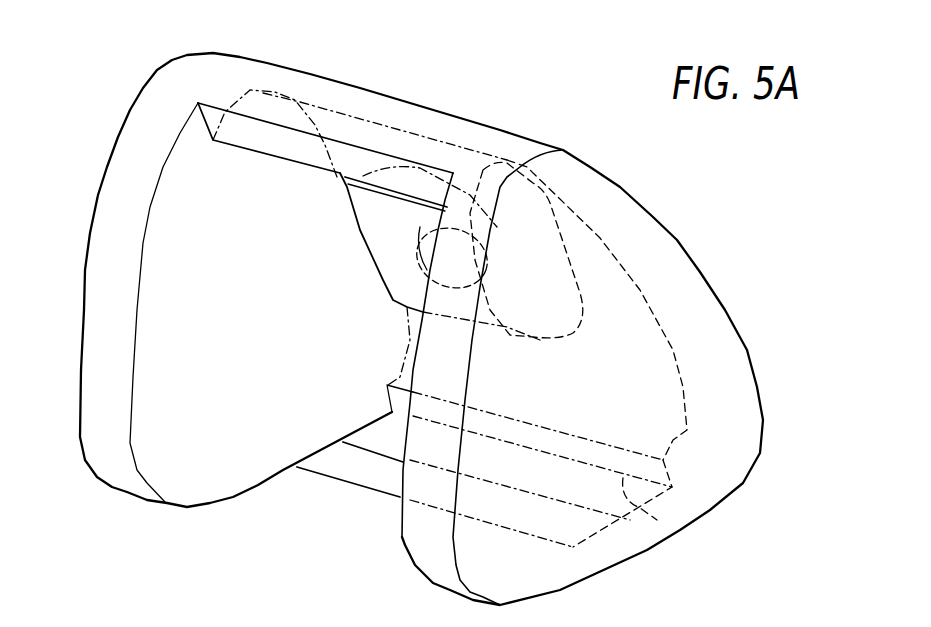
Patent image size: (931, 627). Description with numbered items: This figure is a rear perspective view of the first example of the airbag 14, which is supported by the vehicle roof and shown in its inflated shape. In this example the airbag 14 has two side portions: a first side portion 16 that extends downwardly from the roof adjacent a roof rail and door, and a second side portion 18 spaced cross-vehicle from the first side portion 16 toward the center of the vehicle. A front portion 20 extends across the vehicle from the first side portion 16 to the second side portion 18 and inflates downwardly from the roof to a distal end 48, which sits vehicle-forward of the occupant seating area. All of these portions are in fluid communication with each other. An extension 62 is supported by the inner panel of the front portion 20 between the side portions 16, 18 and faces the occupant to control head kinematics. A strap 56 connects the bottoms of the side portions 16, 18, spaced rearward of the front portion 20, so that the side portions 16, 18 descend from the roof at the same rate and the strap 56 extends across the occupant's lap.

The airbag 14 is at (716, 255).
The first side portion 16 is at (121, 212).
The second side portion 18 is at (723, 378).
The front portion 20 is at (340, 173).
The distal end 48 is at (657, 520).
The strap 56 is at (357, 484).
The extension 62 is at (392, 248).